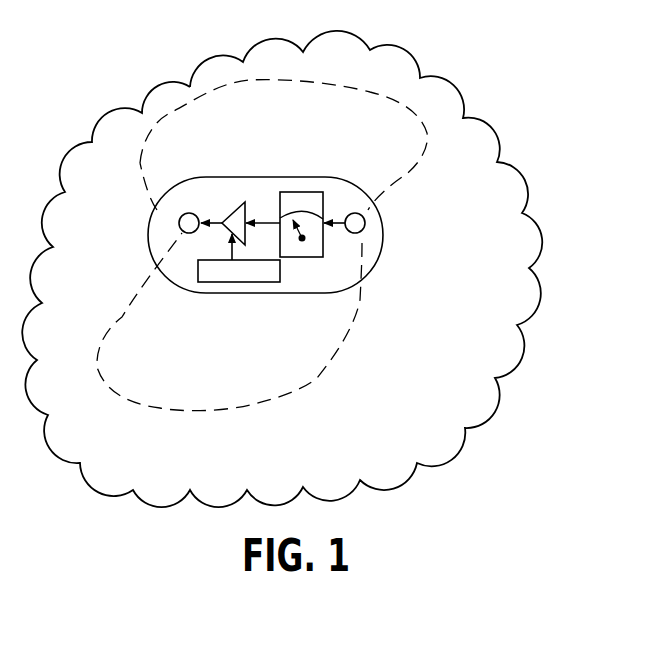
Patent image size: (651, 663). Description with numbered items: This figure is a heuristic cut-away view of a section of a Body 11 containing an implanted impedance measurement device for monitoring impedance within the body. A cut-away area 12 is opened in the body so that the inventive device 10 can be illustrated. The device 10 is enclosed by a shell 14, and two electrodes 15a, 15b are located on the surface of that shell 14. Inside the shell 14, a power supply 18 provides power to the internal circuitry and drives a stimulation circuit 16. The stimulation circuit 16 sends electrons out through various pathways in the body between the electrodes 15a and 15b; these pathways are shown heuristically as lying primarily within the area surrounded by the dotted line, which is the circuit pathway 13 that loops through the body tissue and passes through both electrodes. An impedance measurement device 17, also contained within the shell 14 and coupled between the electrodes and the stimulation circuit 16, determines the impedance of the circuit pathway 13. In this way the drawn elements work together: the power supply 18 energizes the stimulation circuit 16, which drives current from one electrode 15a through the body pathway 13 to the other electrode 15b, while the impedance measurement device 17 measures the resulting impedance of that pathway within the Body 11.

The device 10 is at (291, 172).
The Body 11 is at (566, 187).
The cut-away area 12 is at (511, 306).
The circuit pathway 13 is at (372, 95).
The shell 14 is at (303, 294).
The electrode 15a is at (366, 221).
The electrode 15b is at (189, 213).
The stimulation circuit 16 is at (242, 202).
The impedance measurement device 17 is at (321, 192).
The power supply 18 is at (232, 283).